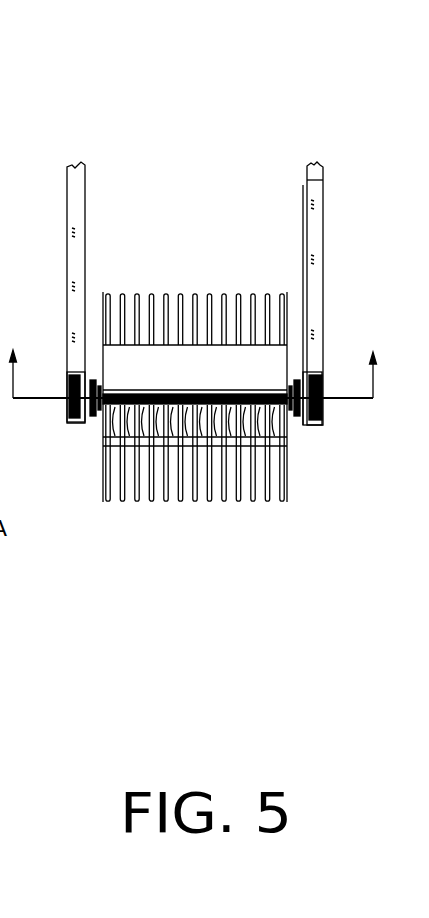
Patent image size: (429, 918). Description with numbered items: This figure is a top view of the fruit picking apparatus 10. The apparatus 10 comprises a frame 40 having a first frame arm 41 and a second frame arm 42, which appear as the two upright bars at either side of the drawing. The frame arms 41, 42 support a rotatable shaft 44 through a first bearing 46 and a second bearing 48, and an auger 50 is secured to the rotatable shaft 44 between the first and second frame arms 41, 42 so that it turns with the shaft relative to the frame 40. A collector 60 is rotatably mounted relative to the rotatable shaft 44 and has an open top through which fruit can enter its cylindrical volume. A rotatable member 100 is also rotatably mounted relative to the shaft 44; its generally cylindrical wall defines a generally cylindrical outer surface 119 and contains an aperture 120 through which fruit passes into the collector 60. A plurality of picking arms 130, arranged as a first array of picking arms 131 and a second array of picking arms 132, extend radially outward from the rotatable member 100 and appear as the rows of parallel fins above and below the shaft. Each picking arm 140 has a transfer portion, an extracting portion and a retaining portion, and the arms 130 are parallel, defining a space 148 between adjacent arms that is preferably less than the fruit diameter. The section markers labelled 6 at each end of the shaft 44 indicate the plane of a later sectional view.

The apparatus 10 is at (182, 130).
The frame 40 is at (307, 187).
The first frame arm 41 is at (320, 180).
The second frame arm 42 is at (87, 187).
The rotatable shaft 44 is at (82, 400).
The first bearing 46 is at (323, 408).
The second bearing 48 is at (67, 412).
The auger 50 is at (253, 425).
The collector 60 is at (280, 432).
The rotatable member 100 is at (248, 322).
The generally cylindrical outer surface 119 is at (212, 345).
The aperture 120 is at (177, 445).
The plurality of picking arms 130 is at (195, 397).
The first array of picking arms 131 is at (165, 293).
The second array of picking arms 132 is at (227, 435).
The picking arm 140 is at (264, 291).
The space 148 is at (143, 485).
The section line 6- 6 is at (194, 342).